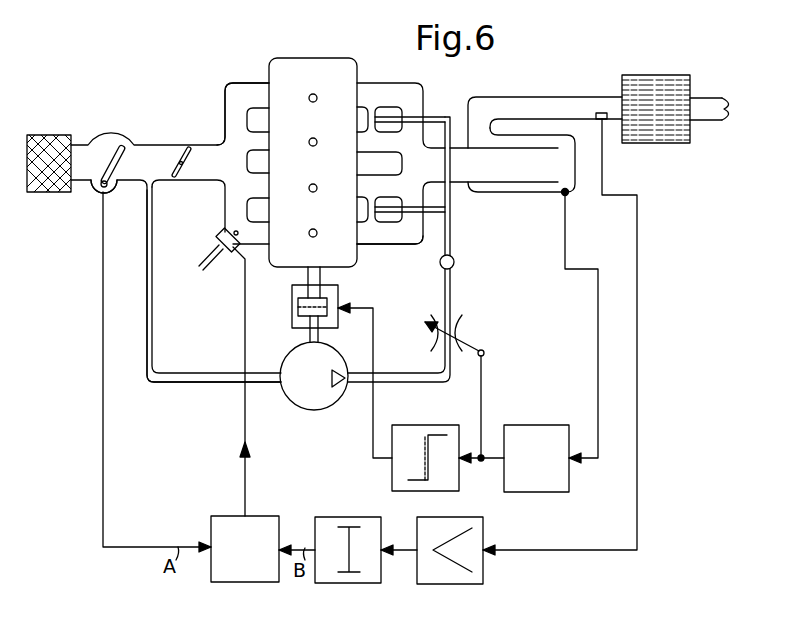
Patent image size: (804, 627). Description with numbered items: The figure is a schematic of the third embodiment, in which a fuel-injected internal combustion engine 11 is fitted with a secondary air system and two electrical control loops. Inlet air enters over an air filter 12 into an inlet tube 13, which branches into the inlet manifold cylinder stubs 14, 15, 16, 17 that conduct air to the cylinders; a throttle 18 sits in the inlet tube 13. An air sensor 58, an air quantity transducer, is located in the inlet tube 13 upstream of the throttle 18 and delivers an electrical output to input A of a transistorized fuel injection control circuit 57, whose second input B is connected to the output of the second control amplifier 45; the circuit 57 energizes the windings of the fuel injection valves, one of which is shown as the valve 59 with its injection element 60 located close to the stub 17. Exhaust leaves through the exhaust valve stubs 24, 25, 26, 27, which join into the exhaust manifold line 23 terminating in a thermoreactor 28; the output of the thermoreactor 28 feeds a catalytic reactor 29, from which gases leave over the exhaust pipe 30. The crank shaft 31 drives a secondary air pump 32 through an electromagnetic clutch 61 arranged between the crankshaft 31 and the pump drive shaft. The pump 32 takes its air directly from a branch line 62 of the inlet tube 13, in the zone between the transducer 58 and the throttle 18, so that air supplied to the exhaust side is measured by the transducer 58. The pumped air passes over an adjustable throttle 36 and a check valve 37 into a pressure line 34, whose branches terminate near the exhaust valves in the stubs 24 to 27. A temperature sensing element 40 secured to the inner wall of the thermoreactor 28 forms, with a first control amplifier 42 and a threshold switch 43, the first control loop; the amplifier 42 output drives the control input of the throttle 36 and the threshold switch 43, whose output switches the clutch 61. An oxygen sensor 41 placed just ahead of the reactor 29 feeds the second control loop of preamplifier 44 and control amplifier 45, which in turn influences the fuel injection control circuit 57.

The internal combustion engine 11 is at (345, 72).
The air filter 12 is at (46, 142).
The inlet tube 13 is at (149, 152).
The cylinder stub 14 is at (258, 90).
The cylinder stub 15 is at (257, 138).
The cylinder stub 16 is at (257, 183).
The cylinder stub 17 is at (258, 232).
The throttle 18 is at (180, 147).
The exhaust manifold line 23 is at (462, 155).
The exhaust valve stub 24 is at (380, 87).
The exhaust valve stub 25 is at (368, 141).
The exhaust valve stub 26 is at (387, 185).
The exhaust valve stub 27 is at (378, 235).
The thermoreactor 28 is at (577, 185).
The catalytic reactor 29 is at (644, 85).
The exhaust pipe 30 is at (711, 103).
The crank shaft 31 is at (320, 276).
The secondary air pump 32 is at (300, 400).
The pressure line 34 is at (452, 231).
The adjustable throttle 36 is at (463, 330).
The check valve 37 is at (454, 262).
The temperature sensing element 40 is at (565, 194).
The oxygen sensor 41 is at (603, 122).
The first control amplifier 42 is at (522, 427).
The threshold switch 43 is at (410, 427).
The preamplifier 44 is at (478, 528).
The second control amplifier 45 is at (337, 519).
The fuel injection control circuit 57 is at (259, 518).
The air sensor 58 is at (116, 166).
The fuel injection valve 59 is at (233, 248).
The injector nozzle 60 is at (215, 250).
The electromagnetic clutch 61 is at (297, 310).
The branch line 62 is at (152, 330).